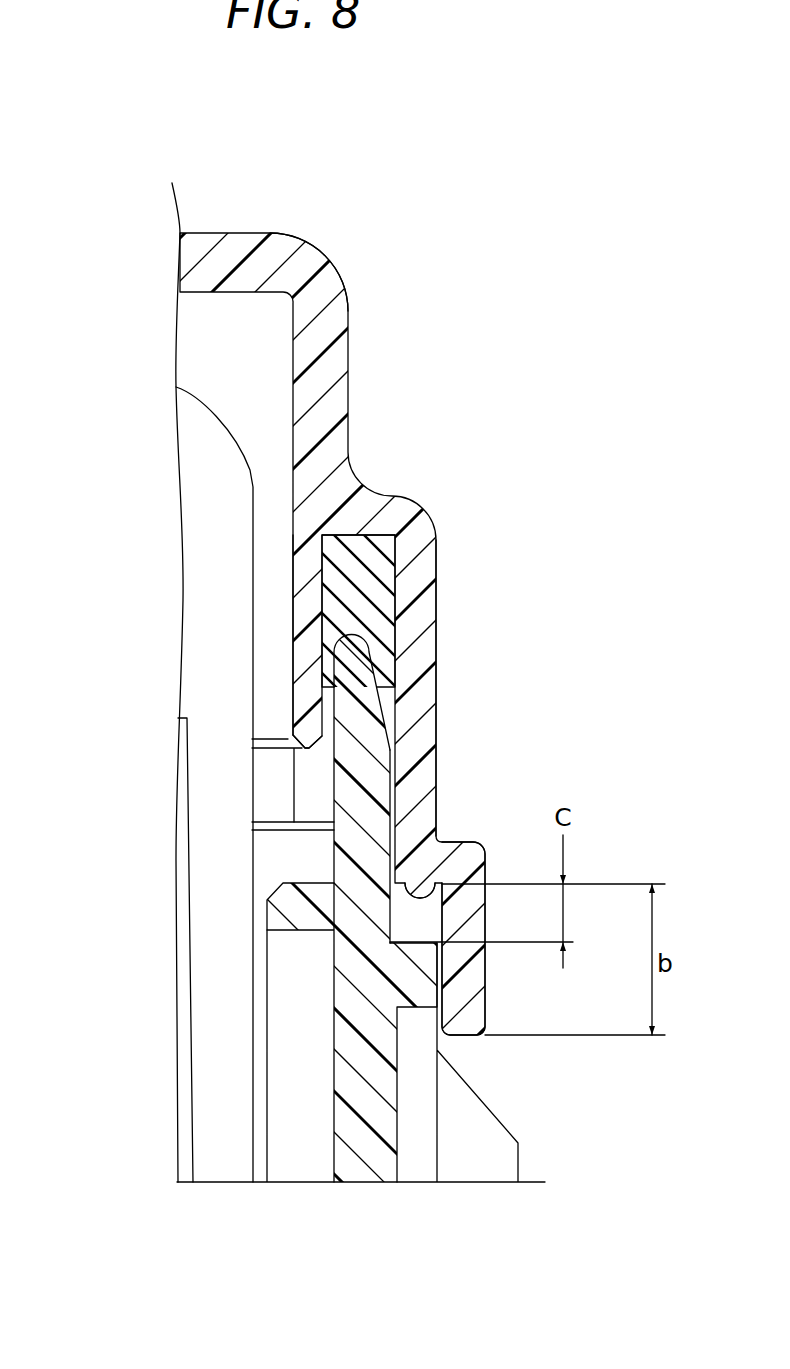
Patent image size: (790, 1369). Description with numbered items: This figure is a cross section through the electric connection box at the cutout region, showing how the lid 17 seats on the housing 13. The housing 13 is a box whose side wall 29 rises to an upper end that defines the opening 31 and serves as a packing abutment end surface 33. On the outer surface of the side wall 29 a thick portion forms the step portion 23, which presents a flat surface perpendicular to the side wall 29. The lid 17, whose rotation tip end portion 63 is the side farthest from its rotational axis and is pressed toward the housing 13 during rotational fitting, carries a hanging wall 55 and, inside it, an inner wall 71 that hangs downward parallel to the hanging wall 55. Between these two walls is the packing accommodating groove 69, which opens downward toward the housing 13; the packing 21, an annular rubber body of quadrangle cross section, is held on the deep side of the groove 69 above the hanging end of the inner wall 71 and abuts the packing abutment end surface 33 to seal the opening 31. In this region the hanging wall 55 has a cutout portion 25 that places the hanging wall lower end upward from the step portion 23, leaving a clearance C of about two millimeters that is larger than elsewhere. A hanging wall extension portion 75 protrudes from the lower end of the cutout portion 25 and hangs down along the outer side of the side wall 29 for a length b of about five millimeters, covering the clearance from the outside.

The housing 13 is at (456, 1207).
The lid 17 is at (221, 230).
The packing 21 is at (363, 550).
The step portion 23 is at (418, 942).
The cutout portion 25 is at (425, 882).
The side wall 29 is at (392, 757).
The opening 31 is at (335, 780).
The packing abutment end surface 33 is at (345, 622).
The hanging wall 55 is at (438, 565).
The rotation tip end portion 63 is at (330, 246).
The packing accommodating groove 69 is at (293, 649).
The inner wall 71 is at (300, 698).
The hanging wall extension portion 75 is at (475, 975).